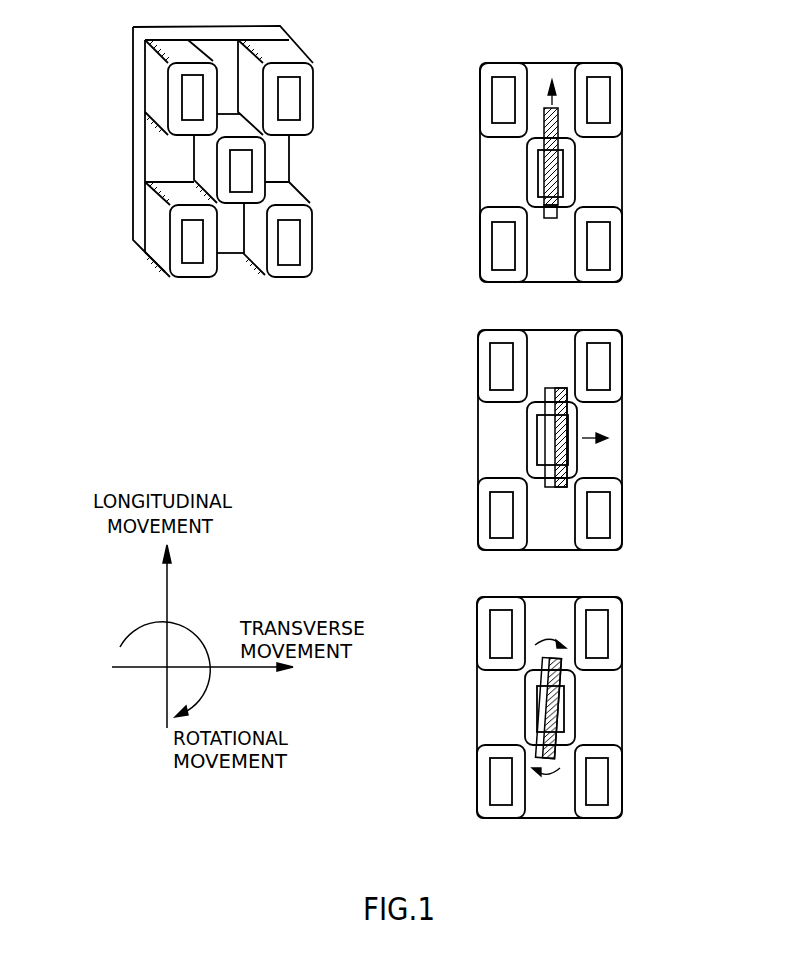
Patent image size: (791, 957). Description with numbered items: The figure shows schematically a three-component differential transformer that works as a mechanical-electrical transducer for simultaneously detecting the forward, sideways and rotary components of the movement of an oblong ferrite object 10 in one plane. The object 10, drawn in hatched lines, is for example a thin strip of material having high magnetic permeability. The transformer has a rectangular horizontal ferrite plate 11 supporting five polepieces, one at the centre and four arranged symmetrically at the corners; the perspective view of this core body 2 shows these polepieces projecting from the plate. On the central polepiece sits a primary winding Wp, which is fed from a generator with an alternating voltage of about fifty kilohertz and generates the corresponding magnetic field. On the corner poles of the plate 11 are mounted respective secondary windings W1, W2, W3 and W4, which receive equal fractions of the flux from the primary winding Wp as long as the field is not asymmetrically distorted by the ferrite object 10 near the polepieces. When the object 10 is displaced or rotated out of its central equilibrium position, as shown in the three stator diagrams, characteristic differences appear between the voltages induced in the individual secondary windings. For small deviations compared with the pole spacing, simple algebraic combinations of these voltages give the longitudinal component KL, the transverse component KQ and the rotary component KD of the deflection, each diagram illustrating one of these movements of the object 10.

The magnetic core body 2 is at (157, 143).
The secondary winding W1 is at (172, 92).
The secondary winding W2 is at (307, 97).
The secondary winding W3 is at (303, 240).
The secondary winding W4 is at (175, 238).
The primary winding Wp is at (257, 165).
The ferrite object 10 is at (550, 165).
The ferrite plate 11 is at (610, 165).
The longitudinal component KL is at (632, 143).
The transverse component KQ is at (606, 440).
The rotary component KD is at (603, 707).